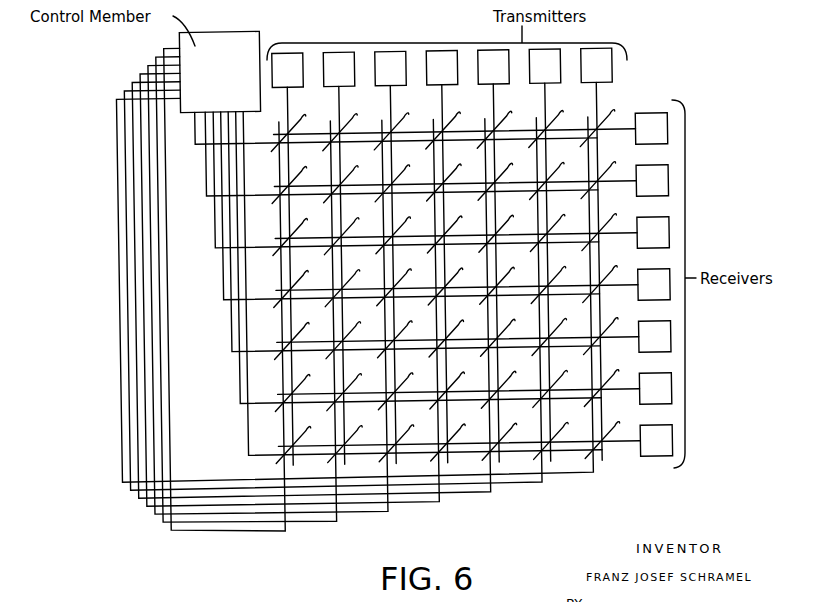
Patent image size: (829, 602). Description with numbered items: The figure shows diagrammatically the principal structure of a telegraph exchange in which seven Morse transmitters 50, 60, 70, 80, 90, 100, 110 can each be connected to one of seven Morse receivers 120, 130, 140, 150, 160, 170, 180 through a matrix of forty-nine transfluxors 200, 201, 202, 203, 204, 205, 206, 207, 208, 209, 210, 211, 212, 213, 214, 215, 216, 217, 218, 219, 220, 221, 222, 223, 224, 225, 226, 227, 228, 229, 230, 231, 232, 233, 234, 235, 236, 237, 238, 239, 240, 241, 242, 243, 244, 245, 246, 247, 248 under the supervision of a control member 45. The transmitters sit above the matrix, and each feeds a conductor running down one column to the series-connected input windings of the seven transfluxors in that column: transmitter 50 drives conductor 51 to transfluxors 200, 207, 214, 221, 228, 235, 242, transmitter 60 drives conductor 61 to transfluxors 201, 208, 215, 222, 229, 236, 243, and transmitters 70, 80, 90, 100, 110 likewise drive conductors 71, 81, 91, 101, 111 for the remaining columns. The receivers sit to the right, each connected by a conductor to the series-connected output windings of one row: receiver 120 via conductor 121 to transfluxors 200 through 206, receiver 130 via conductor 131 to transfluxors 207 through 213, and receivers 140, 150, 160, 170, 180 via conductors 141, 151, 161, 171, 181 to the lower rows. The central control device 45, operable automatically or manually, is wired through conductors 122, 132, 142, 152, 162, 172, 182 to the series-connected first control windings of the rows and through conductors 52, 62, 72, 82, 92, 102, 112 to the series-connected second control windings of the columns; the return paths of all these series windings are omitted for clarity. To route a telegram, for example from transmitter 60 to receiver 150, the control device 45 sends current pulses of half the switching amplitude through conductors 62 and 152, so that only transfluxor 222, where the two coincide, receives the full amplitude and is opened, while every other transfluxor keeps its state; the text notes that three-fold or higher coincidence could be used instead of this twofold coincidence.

The control member 45 is at (208, 82).
The transmitter 50 is at (282, 79).
The transmitter 60 is at (333, 79).
The transmitter 70 is at (384, 79).
The transmitter 80 is at (436, 79).
The transmitter 90 is at (488, 79).
The transmitter 100 is at (539, 79).
The transmitter 110 is at (590, 79).
The conductor 51 is at (290, 98).
The conductor 61 is at (342, 98).
The conductor 71 is at (394, 98).
The conductor 81 is at (445, 98).
The conductor 91 is at (496, 98).
The conductor 101 is at (548, 98).
The conductor 111 is at (600, 98).
The conductor 52 is at (282, 530).
The conductor 62 is at (333, 521).
The conductor 72 is at (384, 512).
The conductor 82 is at (436, 503).
The conductor 92 is at (488, 494).
The conductor 102 is at (539, 485).
The conductor 112 is at (590, 476).
The receiver 120 is at (641, 142).
The receiver 130 is at (641, 194).
The receiver 140 is at (641, 246).
The receiver 150 is at (641, 298).
The receiver 160 is at (641, 350).
The receiver 170 is at (641, 402).
The receiver 180 is at (641, 454).
The conductor 121 is at (622, 132).
The conductor 131 is at (622, 184).
The conductor 141 is at (622, 236).
The conductor 151 is at (622, 288).
The conductor 161 is at (622, 340).
The conductor 171 is at (622, 392).
The conductor 181 is at (622, 444).
The conductor 122 is at (196, 142).
The conductor 132 is at (206, 194).
The conductor 142 is at (214, 246).
The conductor 152 is at (222, 298).
The conductor 162 is at (229, 350).
The conductor 172 is at (236, 402).
The conductor 182 is at (244, 454).
The transfluxor 200 is at (297, 128).
The transfluxor 201 is at (348, 127).
The transfluxor 202 is at (400, 126).
The transfluxor 203 is at (451, 125).
The transfluxor 204 is at (503, 124).
The transfluxor 205 is at (554, 124).
The transfluxor 206 is at (606, 121).
The transfluxor 207 is at (297, 176).
The transfluxor 208 is at (349, 175).
The transfluxor 209 is at (400, 174).
The transfluxor 210 is at (452, 173).
The transfluxor 211 is at (503, 172).
The transfluxor 212 is at (555, 172).
The transfluxor 213 is at (616, 171).
The transfluxor 214 is at (298, 228).
The transfluxor 215 is at (350, 227).
The transfluxor 216 is at (401, 226).
The transfluxor 217 is at (453, 225).
The transfluxor 218 is at (504, 224).
The transfluxor 219 is at (556, 224).
The transfluxor 220 is at (617, 223).
The transfluxor 221 is at (299, 280).
The transfluxor 222 is at (350, 279).
The transfluxor 223 is at (402, 278).
The transfluxor 224 is at (453, 277).
The transfluxor 225 is at (505, 276).
The transfluxor 226 is at (556, 276).
The transfluxor 227 is at (618, 274).
The transfluxor 228 is at (300, 332).
The transfluxor 229 is at (351, 331).
The transfluxor 230 is at (403, 330).
The transfluxor 231 is at (454, 329).
The transfluxor 232 is at (506, 328).
The transfluxor 233 is at (557, 328).
The transfluxor 234 is at (619, 326).
The transfluxor 235 is at (301, 384).
The transfluxor 236 is at (352, 383).
The transfluxor 237 is at (404, 382).
The transfluxor 238 is at (455, 381).
The transfluxor 239 is at (506, 380).
The transfluxor 240 is at (558, 380).
The transfluxor 241 is at (619, 378).
The transfluxor 242 is at (301, 436).
The transfluxor 243 is at (353, 435).
The transfluxor 244 is at (404, 434).
The transfluxor 245 is at (456, 433).
The transfluxor 246 is at (507, 432).
The transfluxor 247 is at (559, 432).
The transfluxor 248 is at (620, 430).